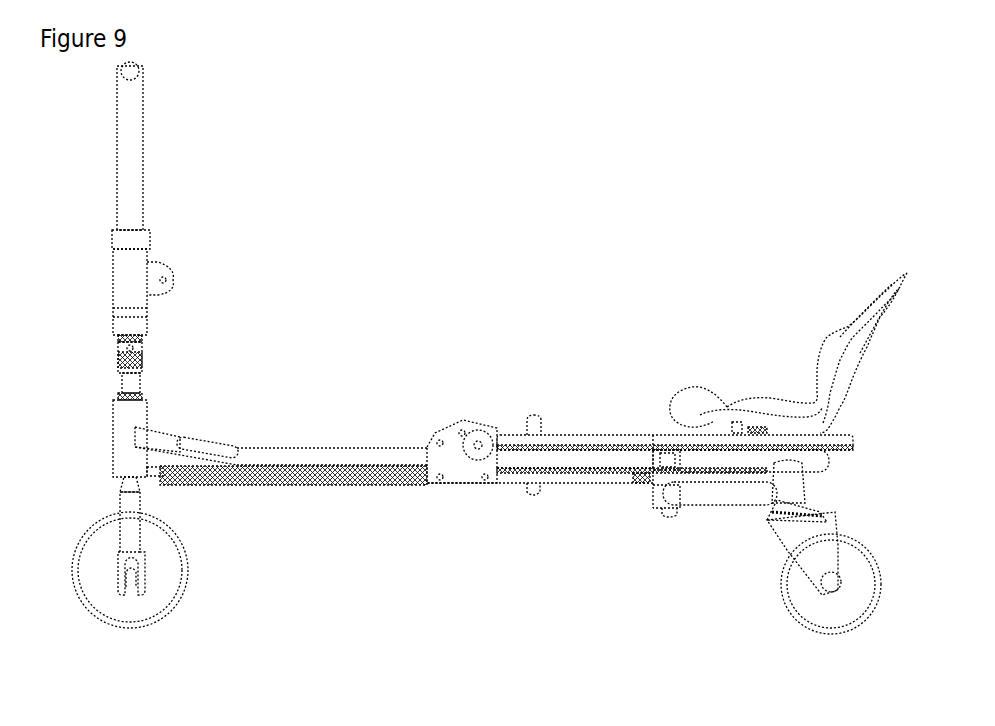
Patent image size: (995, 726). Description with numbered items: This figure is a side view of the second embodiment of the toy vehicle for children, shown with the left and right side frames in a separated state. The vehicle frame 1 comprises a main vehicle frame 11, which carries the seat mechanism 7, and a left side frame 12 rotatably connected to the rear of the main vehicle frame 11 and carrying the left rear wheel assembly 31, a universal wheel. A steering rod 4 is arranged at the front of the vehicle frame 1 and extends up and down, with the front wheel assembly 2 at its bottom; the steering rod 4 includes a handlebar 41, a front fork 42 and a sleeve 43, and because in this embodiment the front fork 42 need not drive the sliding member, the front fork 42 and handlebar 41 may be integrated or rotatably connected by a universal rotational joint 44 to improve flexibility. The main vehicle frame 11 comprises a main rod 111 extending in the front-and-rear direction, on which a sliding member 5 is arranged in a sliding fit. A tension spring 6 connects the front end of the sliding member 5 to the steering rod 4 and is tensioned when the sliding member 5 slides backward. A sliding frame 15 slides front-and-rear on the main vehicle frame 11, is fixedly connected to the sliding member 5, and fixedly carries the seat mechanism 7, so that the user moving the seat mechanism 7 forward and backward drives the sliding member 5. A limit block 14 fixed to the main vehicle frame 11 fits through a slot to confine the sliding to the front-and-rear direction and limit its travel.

The vehicle frame 1 is at (281, 446).
The main rod 111 is at (323, 460).
The front wheel assembly 2 is at (108, 594).
The left rear wheel assembly 31 is at (834, 607).
The steering rod 4 is at (107, 418).
The handlebar 41 is at (130, 197).
The front fork 42 is at (127, 457).
The sleeve 43 is at (127, 271).
The universal rotational joint 44 is at (118, 362).
The sliding member 5 is at (463, 468).
The tension spring 6 is at (240, 470).
The seat mechanism 7 is at (845, 335).
The main vehicle frame 11 is at (550, 463).
The left side frame 12 is at (738, 488).
The limit block 14 is at (537, 490).
The sliding frame 15 is at (507, 442).